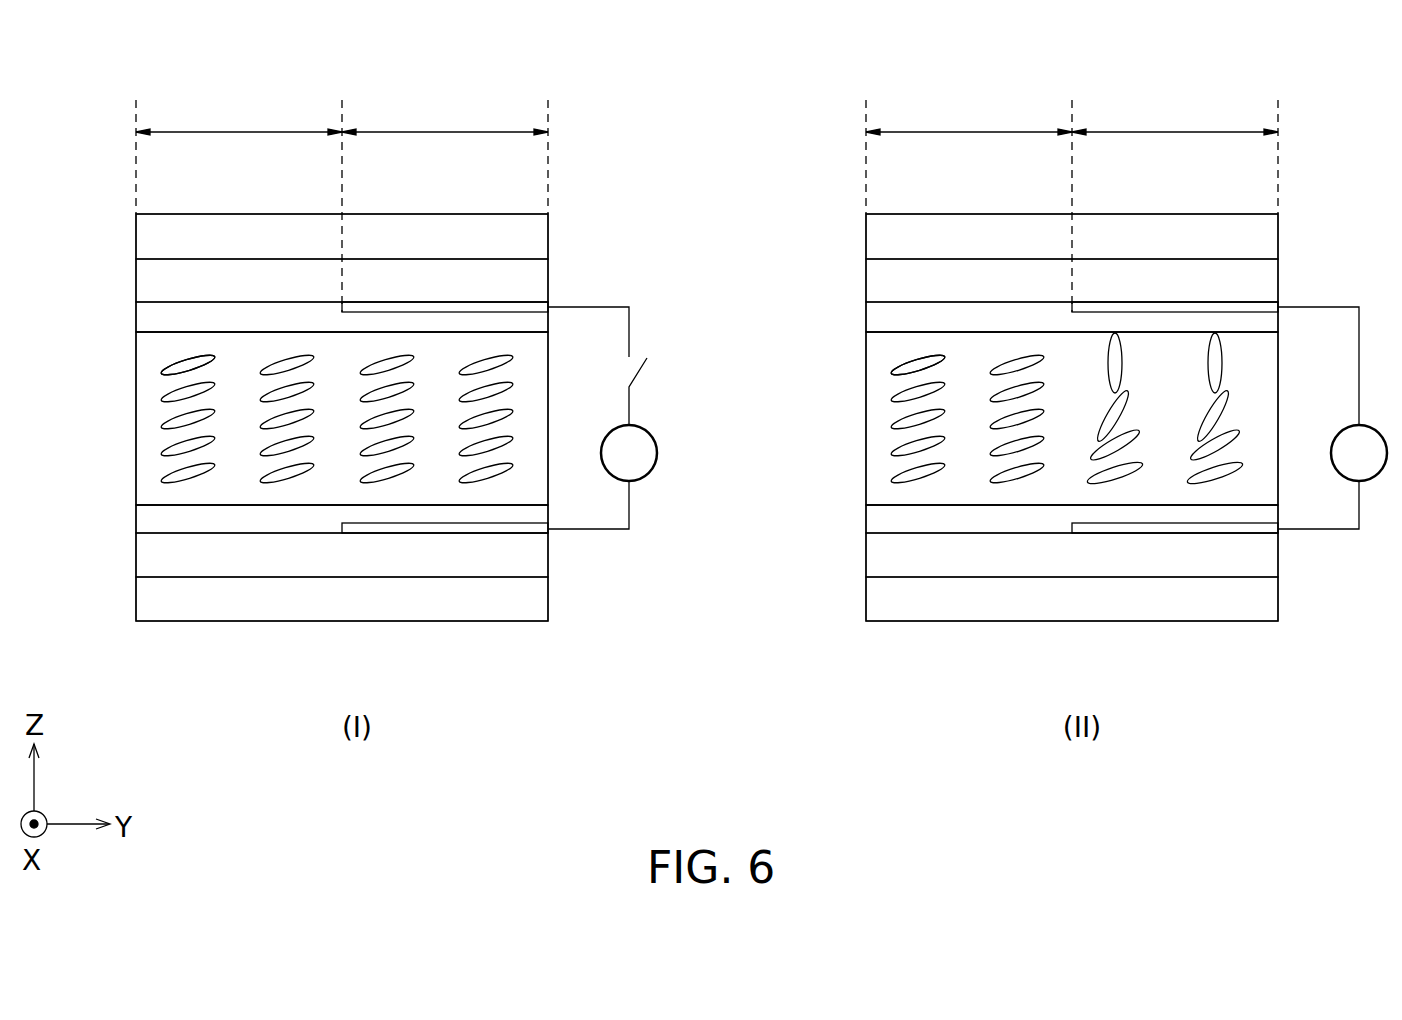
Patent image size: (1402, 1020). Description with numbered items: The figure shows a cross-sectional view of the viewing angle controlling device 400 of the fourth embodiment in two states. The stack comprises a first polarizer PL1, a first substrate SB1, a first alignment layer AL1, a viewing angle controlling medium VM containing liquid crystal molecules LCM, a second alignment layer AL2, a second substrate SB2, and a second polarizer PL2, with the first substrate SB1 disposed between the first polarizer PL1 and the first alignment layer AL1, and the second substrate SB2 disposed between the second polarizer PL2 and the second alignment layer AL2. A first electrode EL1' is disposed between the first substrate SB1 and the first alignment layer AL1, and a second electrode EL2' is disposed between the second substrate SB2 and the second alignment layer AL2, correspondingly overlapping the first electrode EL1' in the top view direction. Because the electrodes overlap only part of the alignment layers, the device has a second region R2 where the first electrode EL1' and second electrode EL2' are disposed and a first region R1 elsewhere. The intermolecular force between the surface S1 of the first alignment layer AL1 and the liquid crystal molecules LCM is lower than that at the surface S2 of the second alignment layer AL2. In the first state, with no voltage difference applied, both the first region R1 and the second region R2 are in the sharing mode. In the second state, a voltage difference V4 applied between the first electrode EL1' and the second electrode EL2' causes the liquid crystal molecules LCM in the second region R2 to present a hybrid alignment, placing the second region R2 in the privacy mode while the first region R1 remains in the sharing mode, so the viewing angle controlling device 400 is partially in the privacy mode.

The viewing angle controlling device 400 is at (100, 109).
The first region R1 is at (604, 118).
The second region R2 is at (810, 118).
The first polarizer PL1 is at (145, 236).
The first substrate SB1 is at (145, 275).
The first alignment layer AL1 is at (145, 317).
The surface of the first alignment layer S1 is at (147, 332).
The first electrode EL1' is at (864, 287).
The liquid crystal molecules LCM is at (188, 420).
The viewing angle controlling medium VM is at (158, 358).
The surface of the second alignment layer S2 is at (147, 505).
The second alignment layer AL2 is at (145, 517).
The second electrode EL2' is at (864, 550).
The second substrate SB2 is at (145, 563).
The second polarizer PL2 is at (145, 601).
The voltage difference V4 is at (967, 418).